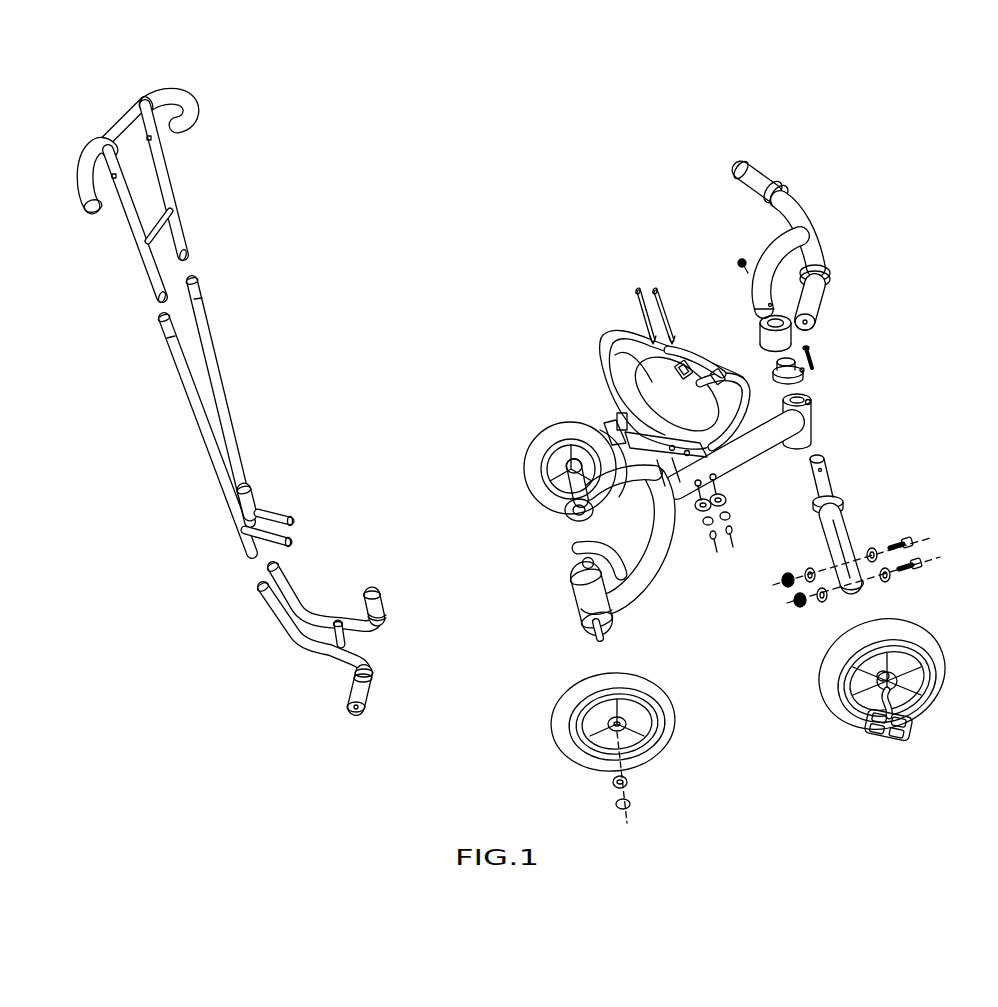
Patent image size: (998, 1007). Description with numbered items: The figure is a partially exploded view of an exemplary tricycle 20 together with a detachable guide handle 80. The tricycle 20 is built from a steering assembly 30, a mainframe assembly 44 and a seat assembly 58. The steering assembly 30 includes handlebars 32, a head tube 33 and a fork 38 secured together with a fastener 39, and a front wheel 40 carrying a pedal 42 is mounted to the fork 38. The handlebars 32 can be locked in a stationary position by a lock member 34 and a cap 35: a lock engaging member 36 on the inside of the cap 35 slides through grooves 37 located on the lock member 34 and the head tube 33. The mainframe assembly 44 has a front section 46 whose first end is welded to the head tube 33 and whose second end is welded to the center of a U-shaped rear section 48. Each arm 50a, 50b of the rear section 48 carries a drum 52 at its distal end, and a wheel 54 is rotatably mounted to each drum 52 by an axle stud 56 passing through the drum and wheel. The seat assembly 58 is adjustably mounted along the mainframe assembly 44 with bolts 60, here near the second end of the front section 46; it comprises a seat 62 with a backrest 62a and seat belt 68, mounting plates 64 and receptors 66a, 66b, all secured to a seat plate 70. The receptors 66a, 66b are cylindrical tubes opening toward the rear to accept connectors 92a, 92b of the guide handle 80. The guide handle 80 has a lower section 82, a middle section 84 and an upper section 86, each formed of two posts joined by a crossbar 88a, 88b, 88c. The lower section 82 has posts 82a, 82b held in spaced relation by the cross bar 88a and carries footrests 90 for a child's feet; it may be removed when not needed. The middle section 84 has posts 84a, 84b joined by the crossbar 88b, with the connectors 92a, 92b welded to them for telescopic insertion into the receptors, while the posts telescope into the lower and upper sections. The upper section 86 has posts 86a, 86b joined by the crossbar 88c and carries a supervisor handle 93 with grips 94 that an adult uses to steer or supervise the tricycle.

The tricycle 20 is at (462, 390).
The steering assembly 30 is at (820, 383).
The handlebars 32 is at (812, 228).
The head tube 33 is at (823, 432).
The lock member 34 is at (820, 357).
The cap 35 is at (752, 323).
The lock engaging member 36 is at (768, 342).
The grooves 37 is at (817, 363).
The fork 38 is at (850, 527).
The fastener 39 is at (807, 350).
The front wheel 40 is at (943, 648).
The pedal 42 is at (902, 743).
The mainframe assembly 44 is at (782, 465).
The front section 46 is at (750, 460).
The rear section 48 is at (655, 580).
The arm 50a is at (624, 496).
The arm 50b is at (607, 563).
The drum 52 is at (560, 522).
The wheel 54 is at (520, 470).
The axle stud 56 is at (590, 637).
The seat assembly 58 is at (542, 353).
The bolts 60 is at (638, 290).
The seat 62 is at (617, 330).
The backrest 62a is at (600, 333).
The mounting plates 64 is at (698, 512).
The receptor 66a is at (533, 425).
The receptor 66b is at (610, 403).
The seat belt 68 is at (713, 362).
The seat plate 70 is at (600, 422).
The guide handle 80 is at (303, 245).
The lower section 82 is at (278, 653).
The lower section post 82a is at (263, 610).
The lower section post 82b is at (287, 580).
The middle section 84 is at (195, 473).
The middle section post 84a is at (173, 363).
The middle section post 84b is at (213, 328).
The upper section 86 is at (113, 260).
The upper section post 86a is at (125, 225).
The upper section post 86b is at (163, 160).
The crossbar 88a is at (340, 622).
The crossbar 88b is at (253, 490).
The crossbar 88c is at (172, 212).
The footrests 90 is at (387, 610).
The connector 92a is at (292, 537).
The connector 92b is at (290, 517).
The supervisor handle 93 is at (112, 126).
The grips 94 is at (78, 173).